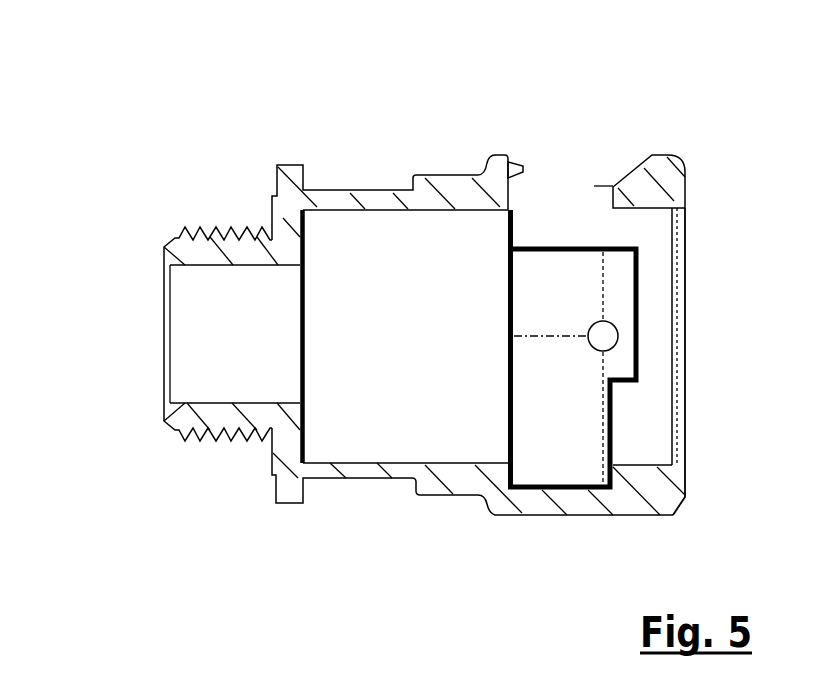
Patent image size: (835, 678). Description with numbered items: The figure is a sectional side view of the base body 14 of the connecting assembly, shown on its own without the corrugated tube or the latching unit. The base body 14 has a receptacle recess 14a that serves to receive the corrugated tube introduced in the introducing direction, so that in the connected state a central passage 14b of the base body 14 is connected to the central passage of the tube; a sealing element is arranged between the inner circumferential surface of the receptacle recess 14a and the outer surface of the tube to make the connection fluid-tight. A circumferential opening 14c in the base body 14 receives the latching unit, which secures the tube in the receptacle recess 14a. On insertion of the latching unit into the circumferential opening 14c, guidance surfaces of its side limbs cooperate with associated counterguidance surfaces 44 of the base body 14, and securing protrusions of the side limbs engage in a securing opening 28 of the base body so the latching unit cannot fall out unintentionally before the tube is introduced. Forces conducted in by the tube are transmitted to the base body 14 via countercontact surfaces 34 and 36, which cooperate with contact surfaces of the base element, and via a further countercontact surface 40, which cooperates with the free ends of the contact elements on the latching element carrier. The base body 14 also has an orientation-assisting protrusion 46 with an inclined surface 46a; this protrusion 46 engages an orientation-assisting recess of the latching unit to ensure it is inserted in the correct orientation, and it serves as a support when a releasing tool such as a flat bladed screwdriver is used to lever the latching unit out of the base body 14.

The base body 14 is at (218, 108).
The receptacle recess 14a is at (395, 320).
The central passage 14b is at (212, 323).
The circumferential opening 14c is at (552, 197).
The countercontact surface 34 is at (523, 165).
The countercontact surface 36 is at (594, 186).
The inclined surface 46a is at (640, 156).
The orientation-assisting protrusion 46 is at (637, 195).
The counterguidance surface 44 is at (560, 285).
The securing opening 28 is at (610, 333).
The countercontact surface 40 is at (595, 493).